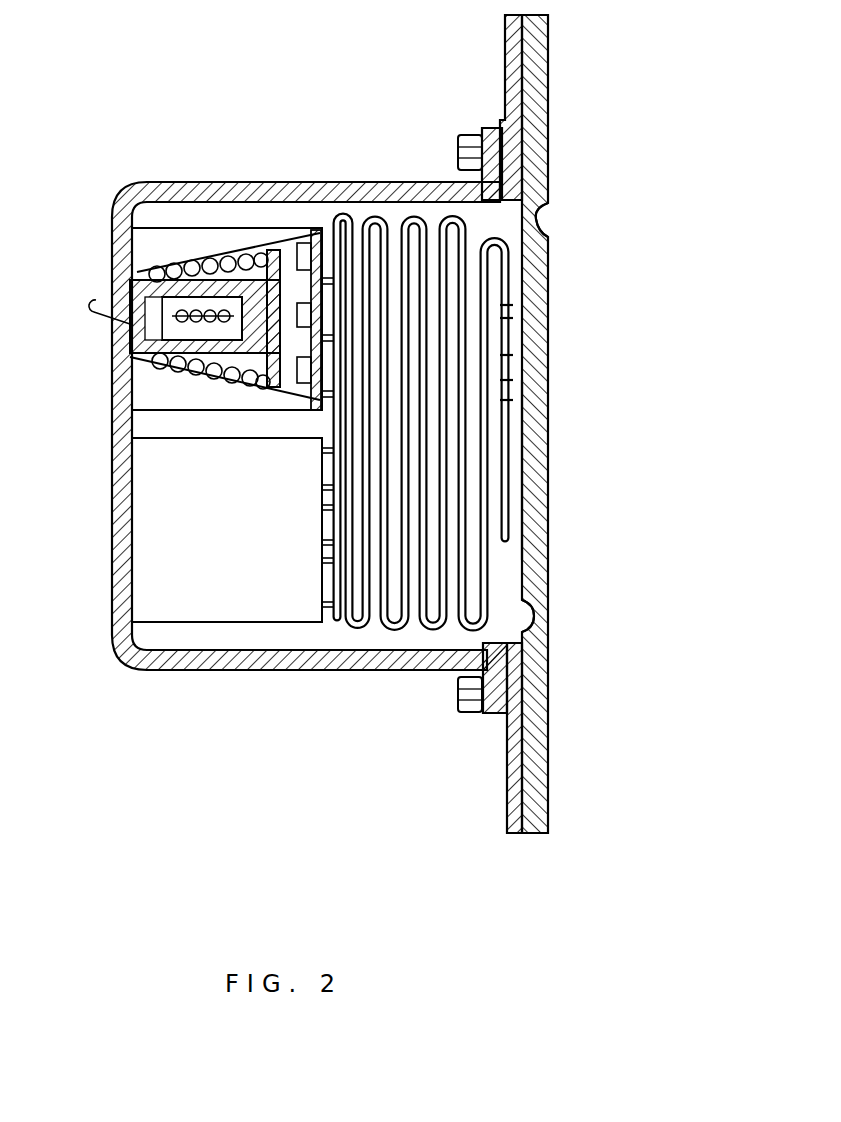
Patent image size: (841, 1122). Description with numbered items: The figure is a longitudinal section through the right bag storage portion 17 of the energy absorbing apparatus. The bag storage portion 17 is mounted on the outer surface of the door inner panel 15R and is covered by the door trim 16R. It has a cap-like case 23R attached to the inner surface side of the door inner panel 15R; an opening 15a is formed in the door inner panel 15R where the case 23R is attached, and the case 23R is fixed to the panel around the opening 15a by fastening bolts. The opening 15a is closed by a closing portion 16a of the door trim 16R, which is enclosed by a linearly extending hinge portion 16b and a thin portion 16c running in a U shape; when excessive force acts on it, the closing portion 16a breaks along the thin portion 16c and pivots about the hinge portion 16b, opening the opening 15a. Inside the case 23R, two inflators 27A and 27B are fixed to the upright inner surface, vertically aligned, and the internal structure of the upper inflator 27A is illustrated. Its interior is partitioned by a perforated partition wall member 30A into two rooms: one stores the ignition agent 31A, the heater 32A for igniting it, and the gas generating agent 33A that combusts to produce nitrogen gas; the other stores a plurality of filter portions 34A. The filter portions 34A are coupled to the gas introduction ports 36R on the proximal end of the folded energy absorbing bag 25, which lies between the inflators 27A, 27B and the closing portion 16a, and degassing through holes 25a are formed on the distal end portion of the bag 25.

The door inner panel 15R is at (510, 46).
The door trim 16R is at (556, 60).
The closing portion 16a is at (550, 462).
The hinge portion 16b is at (546, 224).
The thin portion 16c is at (546, 598).
The opening 15a is at (468, 190).
The case 23R is at (205, 186).
The upper inflator 27A is at (155, 240).
The lower inflator 27B is at (145, 572).
The partition wall member 30A is at (292, 262).
The ignition agent 31A is at (262, 290).
The heater 32A is at (133, 345).
The gas generating agent 33A is at (228, 364).
The filter portions 34A is at (289, 300).
The gas introduction ports 36R is at (330, 310).
The energy absorbing bag 25 is at (430, 628).
The degassing through holes 25a is at (512, 398).
The bag storage portion 17 is at (155, 682).